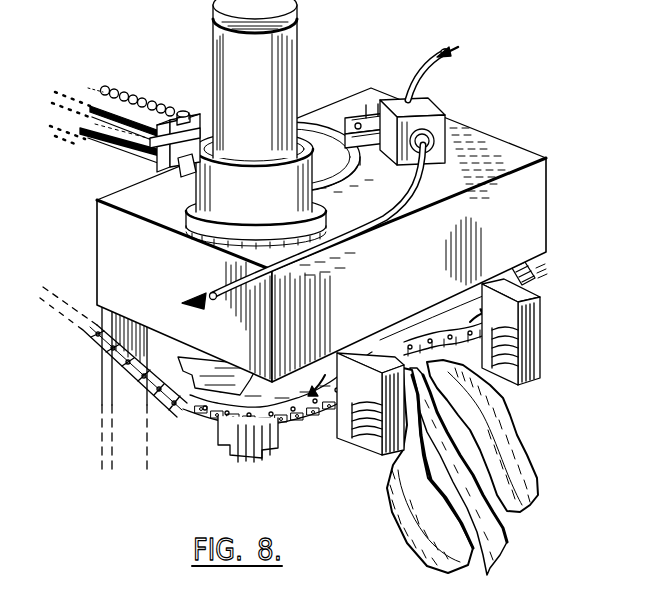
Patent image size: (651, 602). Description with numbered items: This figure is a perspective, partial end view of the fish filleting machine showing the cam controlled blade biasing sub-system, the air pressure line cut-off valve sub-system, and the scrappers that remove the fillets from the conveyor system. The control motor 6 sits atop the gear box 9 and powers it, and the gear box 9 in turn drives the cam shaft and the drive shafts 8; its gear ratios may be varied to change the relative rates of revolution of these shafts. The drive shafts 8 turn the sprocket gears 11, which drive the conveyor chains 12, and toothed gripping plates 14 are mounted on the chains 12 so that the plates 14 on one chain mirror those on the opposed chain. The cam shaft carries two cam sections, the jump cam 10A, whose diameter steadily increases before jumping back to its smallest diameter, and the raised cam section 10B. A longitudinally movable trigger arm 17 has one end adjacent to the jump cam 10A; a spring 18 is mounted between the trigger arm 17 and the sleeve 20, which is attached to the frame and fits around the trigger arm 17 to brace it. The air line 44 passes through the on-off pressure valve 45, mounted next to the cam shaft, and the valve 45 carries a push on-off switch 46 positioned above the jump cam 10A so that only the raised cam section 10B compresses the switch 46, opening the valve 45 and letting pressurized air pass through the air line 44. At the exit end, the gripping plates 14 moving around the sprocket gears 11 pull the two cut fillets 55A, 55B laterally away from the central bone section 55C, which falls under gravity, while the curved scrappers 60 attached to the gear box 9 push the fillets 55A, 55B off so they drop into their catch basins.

The control motor 6 is at (290, 48).
The drive shaft 8 is at (240, 376).
The gear box 9 is at (534, 203).
The jump cam 10A is at (335, 158).
The cam section 10B is at (313, 130).
The sprocket gear 11 is at (519, 291).
The conveyor chain 12 is at (103, 352).
The toothed gripping plate 14 is at (528, 270).
The trigger arm 17 is at (100, 110).
The spring 18 is at (140, 97).
The sleeve 20 is at (163, 146).
The air line 44 is at (431, 68).
The on-off pressure valve 45 is at (422, 110).
The push on-off switch 46 is at (344, 110).
The cut fillet 55A is at (402, 515).
The cut fillet 55B is at (505, 436).
The central bone section 55C is at (500, 535).
The scrapper 60 is at (537, 338).